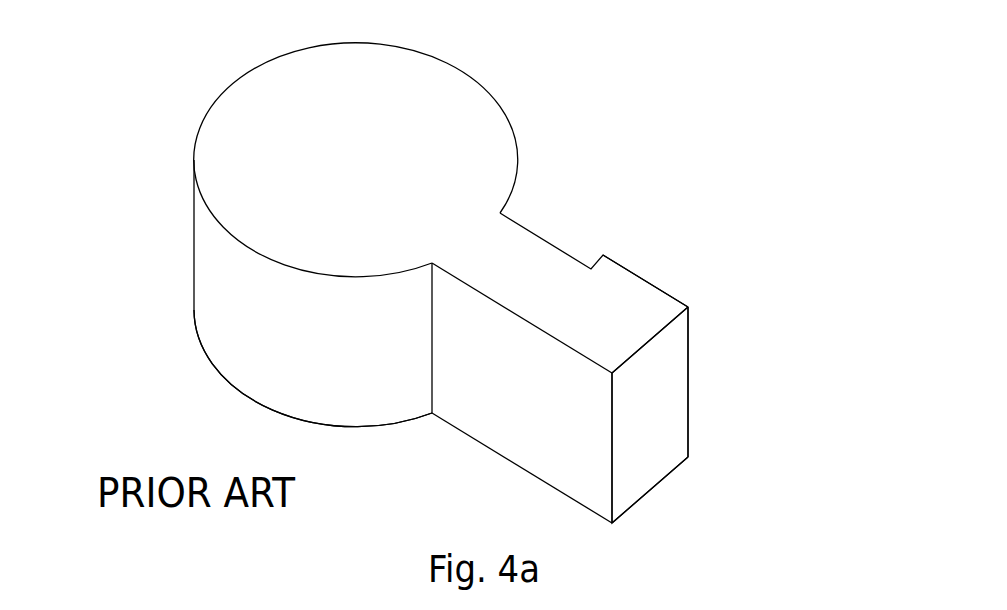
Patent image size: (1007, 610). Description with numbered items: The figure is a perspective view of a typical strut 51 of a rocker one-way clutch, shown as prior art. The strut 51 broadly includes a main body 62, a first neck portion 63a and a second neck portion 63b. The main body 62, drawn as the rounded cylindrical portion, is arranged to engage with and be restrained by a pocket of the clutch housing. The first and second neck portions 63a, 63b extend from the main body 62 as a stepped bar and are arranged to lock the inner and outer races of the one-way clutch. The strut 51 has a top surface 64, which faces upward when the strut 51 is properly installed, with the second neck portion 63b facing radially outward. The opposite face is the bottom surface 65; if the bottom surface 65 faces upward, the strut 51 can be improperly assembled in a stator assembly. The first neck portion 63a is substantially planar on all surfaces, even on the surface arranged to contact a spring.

The strut 51 is at (447, 264).
The main body 62 is at (194, 245).
The first neck portion 63a is at (548, 237).
The second neck portion 63b is at (657, 285).
The top surface 64 is at (418, 127).
The bottom surface 65 is at (253, 403).